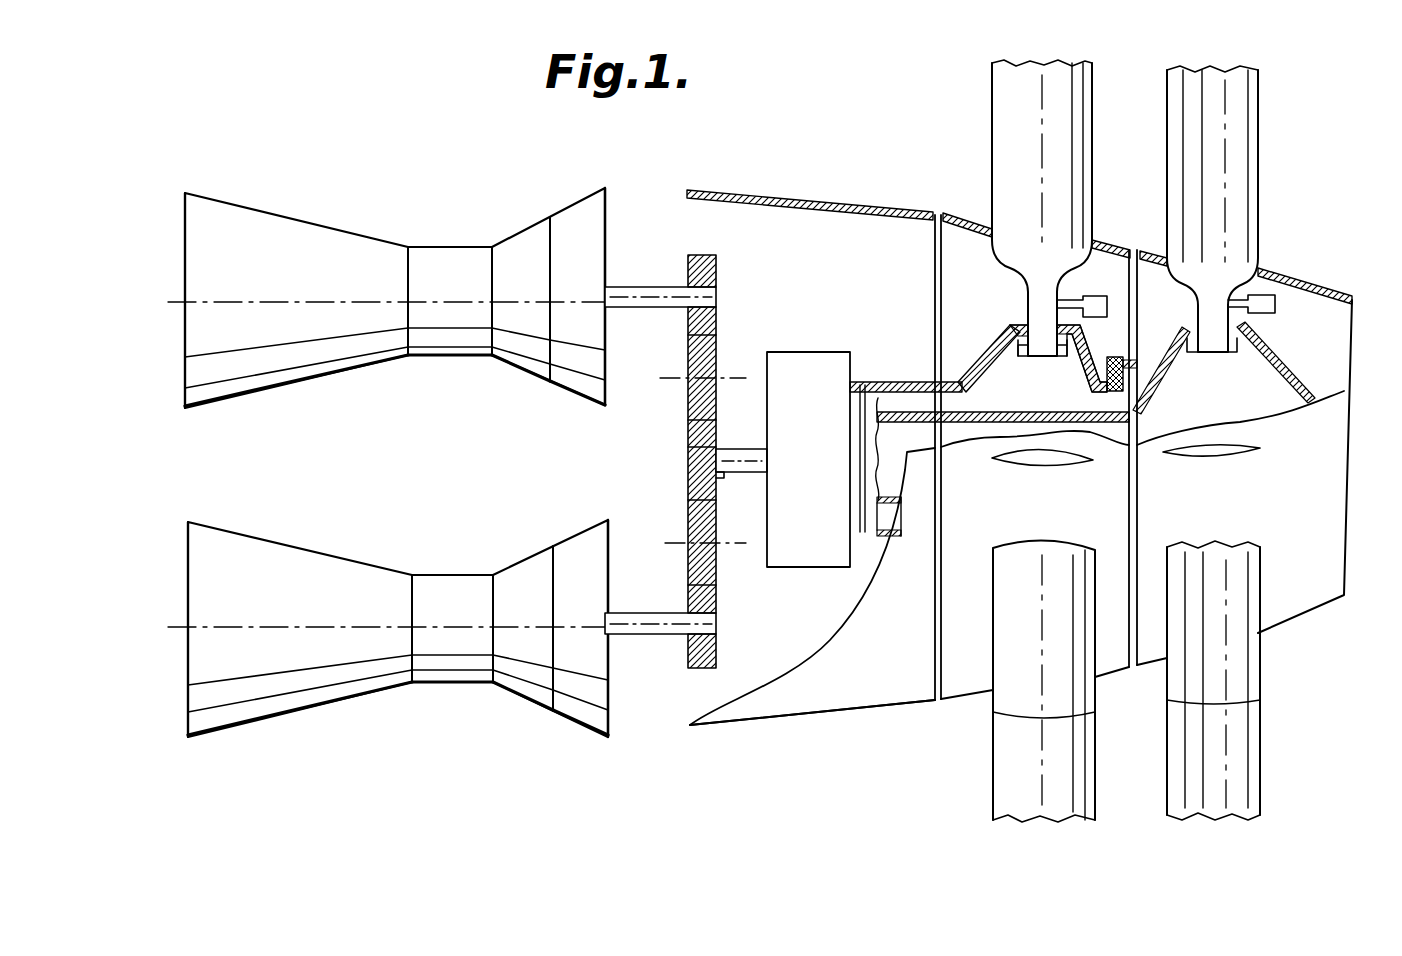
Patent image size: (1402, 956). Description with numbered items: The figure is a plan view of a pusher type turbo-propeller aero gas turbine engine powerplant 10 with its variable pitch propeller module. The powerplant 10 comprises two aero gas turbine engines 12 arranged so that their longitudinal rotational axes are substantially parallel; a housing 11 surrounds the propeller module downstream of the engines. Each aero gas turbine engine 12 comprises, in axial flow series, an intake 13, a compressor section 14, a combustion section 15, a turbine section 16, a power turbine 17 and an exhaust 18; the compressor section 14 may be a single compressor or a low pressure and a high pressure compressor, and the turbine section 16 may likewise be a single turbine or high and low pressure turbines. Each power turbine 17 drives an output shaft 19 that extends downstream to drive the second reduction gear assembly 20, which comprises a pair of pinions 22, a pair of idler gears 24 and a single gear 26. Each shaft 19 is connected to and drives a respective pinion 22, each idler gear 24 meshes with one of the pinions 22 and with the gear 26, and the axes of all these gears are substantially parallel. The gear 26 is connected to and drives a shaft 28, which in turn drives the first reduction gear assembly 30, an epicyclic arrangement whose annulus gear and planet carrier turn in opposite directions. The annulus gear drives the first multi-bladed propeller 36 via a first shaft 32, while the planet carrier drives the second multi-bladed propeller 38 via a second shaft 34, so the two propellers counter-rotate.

The aero gas turbine engine powerplant 10 is at (666, 173).
The housing 11 is at (874, 183).
The aero gas turbine engine 12 is at (290, 209).
The intake 13 is at (184, 302).
The compressor section 14 is at (276, 370).
The combustion section 15 is at (437, 336).
The turbine section 16 is at (530, 344).
The power turbine 17 is at (583, 368).
The exhaust 18 is at (607, 212).
The output shaft 19 is at (636, 288).
The second reduction gear assembly 20 is at (729, 645).
The pinion 22 is at (716, 273).
The idler gear 24 is at (693, 351).
The gear 26 is at (690, 449).
The shaft 28 is at (712, 479).
The first reduction gear assembly 30 is at (812, 380).
The first shaft 32 is at (877, 383).
The second shaft 34 is at (890, 424).
The first multi-bladed propeller 36 is at (1016, 138).
The second multi-bladed propeller 38 is at (1240, 137).